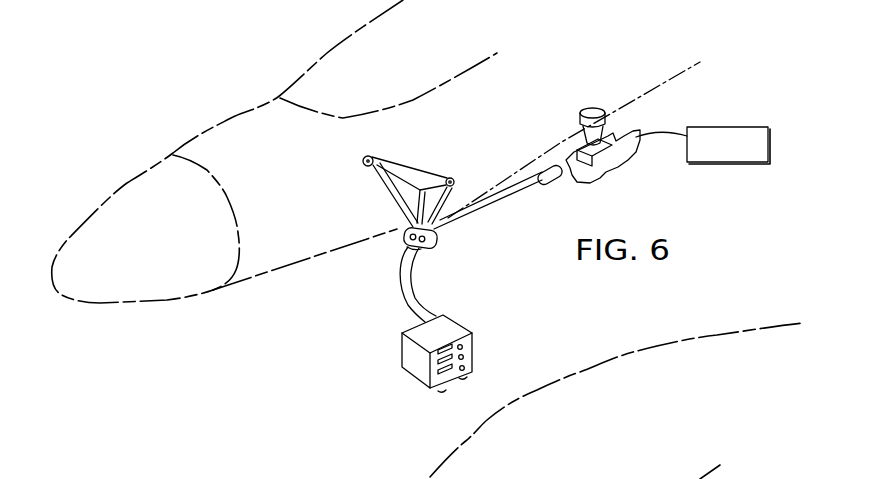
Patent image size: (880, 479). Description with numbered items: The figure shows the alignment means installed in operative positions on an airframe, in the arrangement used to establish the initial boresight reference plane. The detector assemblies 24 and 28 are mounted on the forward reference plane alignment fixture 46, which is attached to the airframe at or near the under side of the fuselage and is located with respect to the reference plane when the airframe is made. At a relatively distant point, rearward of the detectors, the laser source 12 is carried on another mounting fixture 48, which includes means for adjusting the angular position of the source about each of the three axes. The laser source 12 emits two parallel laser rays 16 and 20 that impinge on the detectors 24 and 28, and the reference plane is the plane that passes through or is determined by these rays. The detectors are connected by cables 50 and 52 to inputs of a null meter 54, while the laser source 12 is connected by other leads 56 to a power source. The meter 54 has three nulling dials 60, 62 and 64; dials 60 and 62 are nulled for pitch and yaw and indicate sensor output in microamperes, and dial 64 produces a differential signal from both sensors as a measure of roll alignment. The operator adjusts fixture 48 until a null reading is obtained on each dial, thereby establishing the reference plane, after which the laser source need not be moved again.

The laser source 12 is at (602, 166).
The laser ray 16 is at (512, 190).
The laser ray 20 is at (505, 184).
The detector 24 is at (422, 248).
The detector 28 is at (402, 226).
The reference plane alignment fixture 46 is at (422, 170).
The mounting fixture 48 is at (591, 107).
The cable 50 is at (416, 301).
The cable 52 is at (399, 299).
The null meter 54 is at (403, 356).
The leads 56 is at (657, 133).
The nulling dial 60 is at (450, 348).
The nulling dial 62 is at (431, 377).
The nulling dial 64 is at (445, 389).